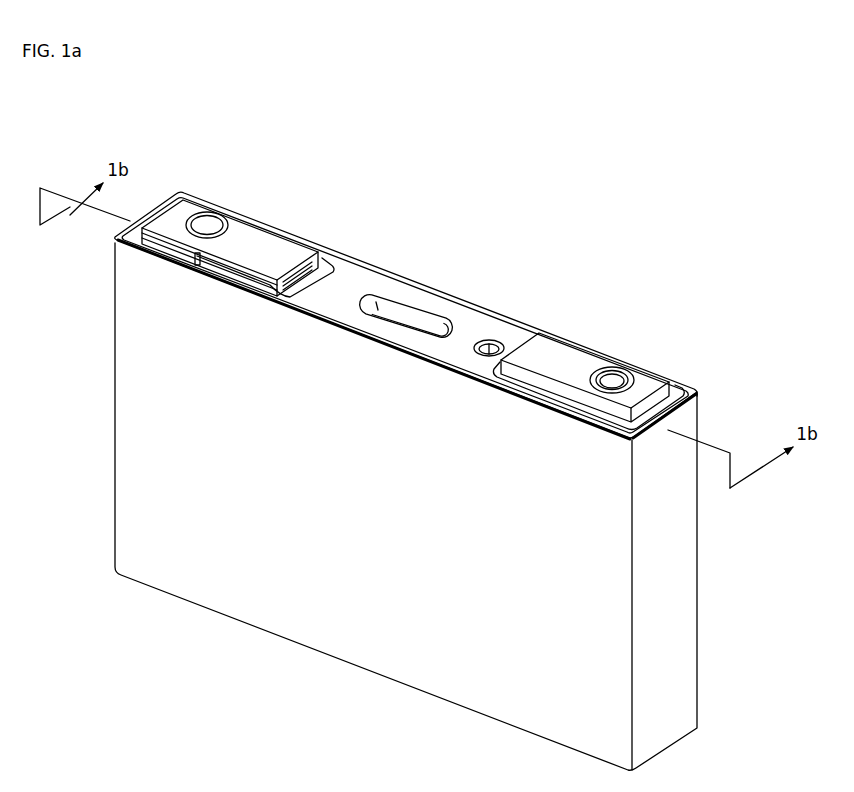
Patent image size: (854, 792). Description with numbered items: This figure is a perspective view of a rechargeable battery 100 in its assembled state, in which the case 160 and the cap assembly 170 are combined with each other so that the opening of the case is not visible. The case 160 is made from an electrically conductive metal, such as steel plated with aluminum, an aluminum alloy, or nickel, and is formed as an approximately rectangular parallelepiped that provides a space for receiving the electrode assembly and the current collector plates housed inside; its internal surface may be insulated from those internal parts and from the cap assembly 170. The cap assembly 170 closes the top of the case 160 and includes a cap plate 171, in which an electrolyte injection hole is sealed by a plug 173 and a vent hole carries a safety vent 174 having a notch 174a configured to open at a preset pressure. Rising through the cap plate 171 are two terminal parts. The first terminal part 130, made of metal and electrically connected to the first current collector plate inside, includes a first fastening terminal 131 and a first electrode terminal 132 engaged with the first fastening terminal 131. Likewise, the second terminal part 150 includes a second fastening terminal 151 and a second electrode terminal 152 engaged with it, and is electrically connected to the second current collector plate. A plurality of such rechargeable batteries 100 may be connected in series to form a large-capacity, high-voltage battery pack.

The rechargeable battery 100 is at (779, 208).
The first terminal part 130 is at (667, 300).
The first fastening terminal 131 is at (613, 377).
The first electrode terminal 132 is at (560, 357).
The second terminal part 150 is at (227, 135).
The second fastening terminal 151 is at (207, 223).
The second electrode terminal 152 is at (270, 240).
The case 160 is at (682, 571).
The cap assembly 170 is at (375, 182).
The cap plate 171 is at (355, 268).
The plug 173 is at (492, 342).
The safety vent 174 is at (425, 325).
The notch 174a is at (395, 295).